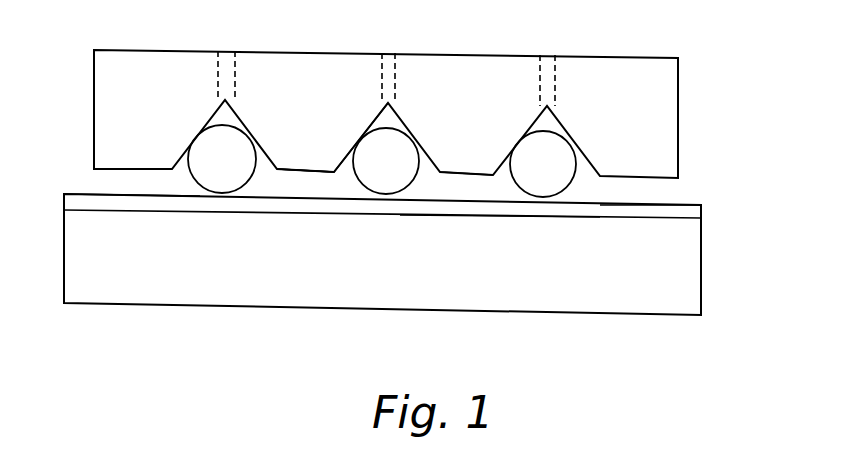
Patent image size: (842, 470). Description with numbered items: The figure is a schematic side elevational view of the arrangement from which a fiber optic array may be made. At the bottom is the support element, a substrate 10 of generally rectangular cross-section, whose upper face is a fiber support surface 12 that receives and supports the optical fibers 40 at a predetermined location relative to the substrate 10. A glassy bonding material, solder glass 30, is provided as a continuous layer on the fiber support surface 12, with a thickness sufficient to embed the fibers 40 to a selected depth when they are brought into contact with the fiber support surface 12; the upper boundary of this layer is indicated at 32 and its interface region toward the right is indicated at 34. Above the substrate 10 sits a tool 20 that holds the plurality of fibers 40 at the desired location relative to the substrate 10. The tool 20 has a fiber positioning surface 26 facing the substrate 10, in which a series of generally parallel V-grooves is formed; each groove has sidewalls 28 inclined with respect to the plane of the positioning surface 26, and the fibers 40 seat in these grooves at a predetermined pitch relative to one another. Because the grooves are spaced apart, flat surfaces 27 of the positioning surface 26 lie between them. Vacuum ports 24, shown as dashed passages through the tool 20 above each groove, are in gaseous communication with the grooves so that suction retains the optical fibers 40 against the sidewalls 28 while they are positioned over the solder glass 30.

The substrate 10 is at (690, 300).
The fiber support surface 12 is at (497, 215).
The tool 20 is at (678, 63).
The vacuum ports 24 is at (224, 77).
The fiber positioning surface 26 is at (141, 167).
The flat surfaces 27 is at (309, 171).
The sidewalls 28 is at (432, 173).
The solder glass 30 is at (703, 212).
The upper surface of layer 32 is at (93, 192).
The interface surface 34 is at (664, 226).
The optical fibers 40 is at (560, 167).